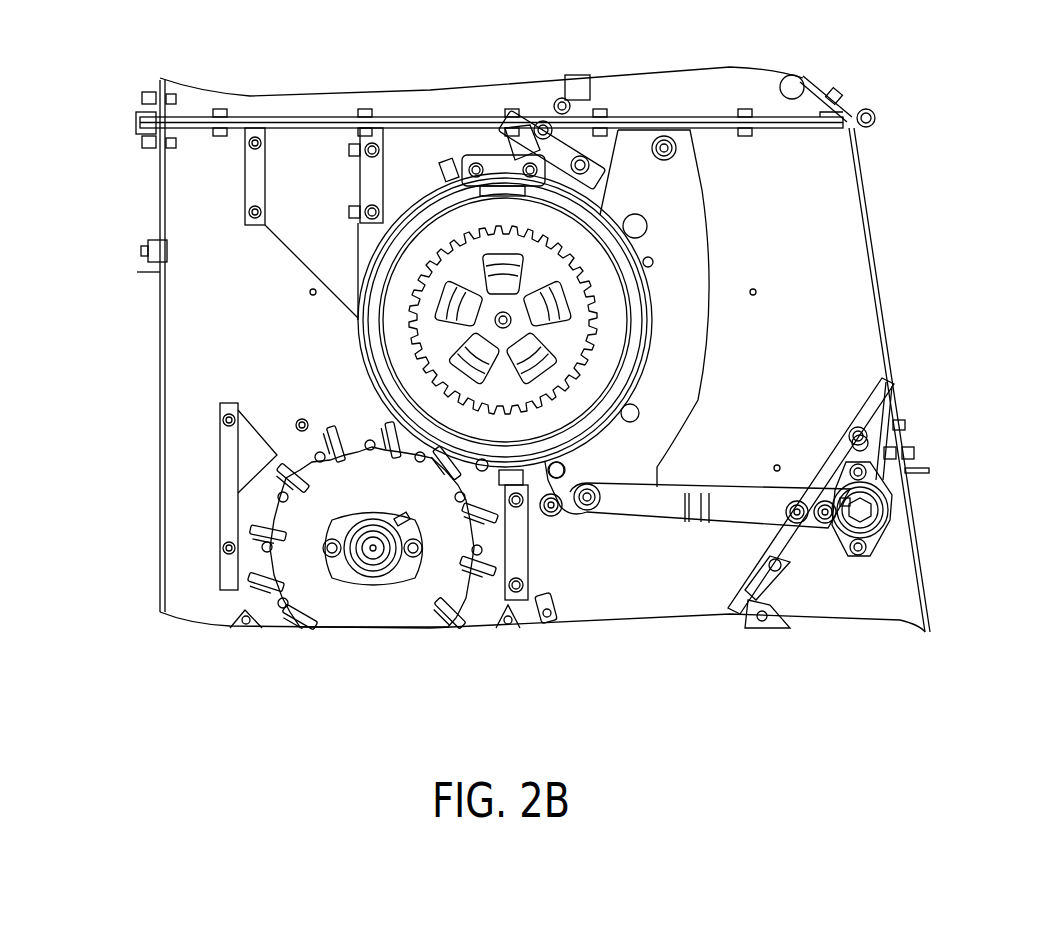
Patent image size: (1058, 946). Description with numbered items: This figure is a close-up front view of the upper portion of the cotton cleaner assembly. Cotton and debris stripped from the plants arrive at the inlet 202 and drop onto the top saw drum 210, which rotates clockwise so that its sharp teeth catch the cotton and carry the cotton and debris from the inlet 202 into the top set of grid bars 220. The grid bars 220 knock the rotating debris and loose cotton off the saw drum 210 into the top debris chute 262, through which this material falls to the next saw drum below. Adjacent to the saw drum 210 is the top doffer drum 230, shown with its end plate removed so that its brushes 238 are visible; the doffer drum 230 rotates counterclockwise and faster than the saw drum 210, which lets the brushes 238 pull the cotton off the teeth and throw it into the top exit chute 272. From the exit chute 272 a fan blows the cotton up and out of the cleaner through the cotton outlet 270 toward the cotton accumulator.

The inlet 202 is at (473, 145).
The top saw drum 210 is at (445, 220).
The top set of grid bars 220 is at (700, 317).
The top doffer drum 230 is at (357, 608).
The brushes 238 is at (447, 627).
The top debris chute 262 is at (788, 385).
The cotton outlet 270 is at (126, 287).
The top exit chute 272 is at (252, 388).